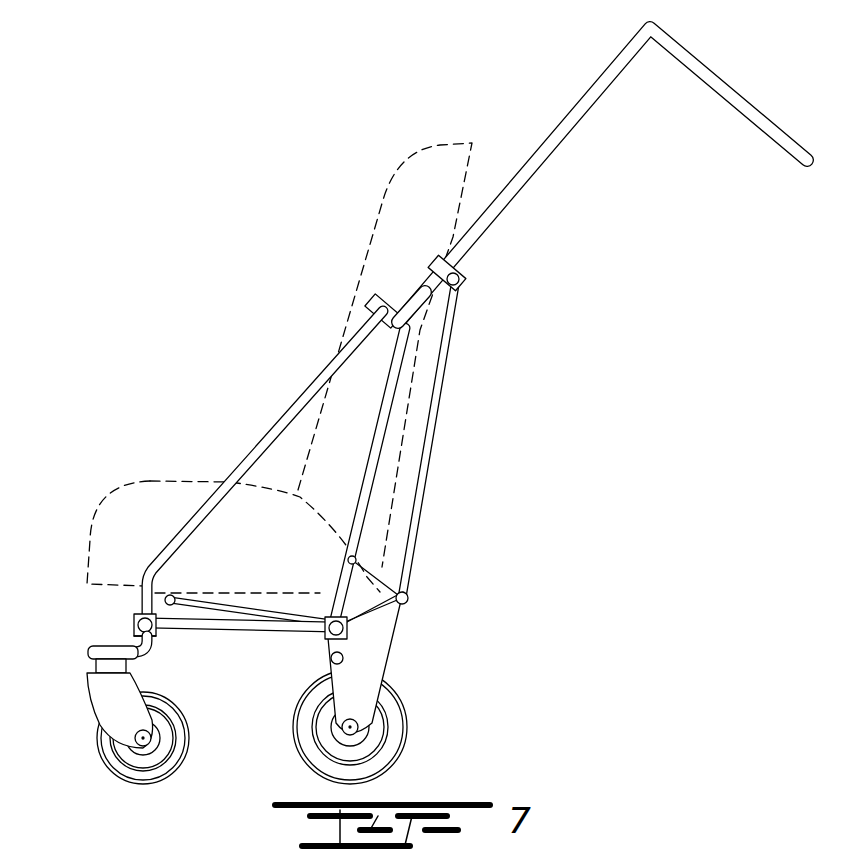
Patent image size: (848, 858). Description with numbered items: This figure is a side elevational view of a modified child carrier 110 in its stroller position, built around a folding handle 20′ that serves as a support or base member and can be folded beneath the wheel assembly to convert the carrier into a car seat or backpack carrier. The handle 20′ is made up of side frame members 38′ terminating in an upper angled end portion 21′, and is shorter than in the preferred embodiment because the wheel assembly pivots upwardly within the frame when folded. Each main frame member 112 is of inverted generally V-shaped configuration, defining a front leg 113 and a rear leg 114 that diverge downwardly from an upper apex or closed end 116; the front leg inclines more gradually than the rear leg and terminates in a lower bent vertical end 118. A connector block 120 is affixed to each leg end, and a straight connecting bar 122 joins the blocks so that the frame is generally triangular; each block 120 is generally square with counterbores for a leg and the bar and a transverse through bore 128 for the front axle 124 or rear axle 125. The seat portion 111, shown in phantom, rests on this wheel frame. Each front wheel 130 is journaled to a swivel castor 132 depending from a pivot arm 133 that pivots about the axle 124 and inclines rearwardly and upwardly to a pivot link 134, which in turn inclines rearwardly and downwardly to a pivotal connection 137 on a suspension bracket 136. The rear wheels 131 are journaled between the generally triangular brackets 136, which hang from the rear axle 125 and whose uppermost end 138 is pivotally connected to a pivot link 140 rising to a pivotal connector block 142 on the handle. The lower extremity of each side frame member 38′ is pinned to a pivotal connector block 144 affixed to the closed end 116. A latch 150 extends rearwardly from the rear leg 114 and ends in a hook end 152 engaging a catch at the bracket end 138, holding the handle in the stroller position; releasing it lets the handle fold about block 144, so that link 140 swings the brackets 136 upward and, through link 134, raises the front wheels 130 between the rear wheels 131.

The folding handle 20′ is at (545, 160).
The upper angled end portion 21′ is at (745, 97).
The side frame member 38′ is at (596, 100).
The carrier 110 is at (332, 363).
The seat portion 111 is at (150, 481).
The main frame member 112 is at (401, 369).
The front leg 113 is at (294, 404).
The rear leg 114 is at (396, 401).
The upper apex or closed end 116 is at (416, 316).
The lower bent vertical end 118 is at (142, 592).
The connector block 120 is at (348, 627).
The straight connecting bar 122 is at (240, 633).
The front axle 124 is at (133, 625).
The rear axle 125 is at (344, 657).
The transverse through bore 128 is at (320, 593).
The front wheel 130 is at (190, 750).
The rear wheel 131 is at (409, 722).
The swivel mount or castor 132 is at (90, 688).
The pivot arm 133 is at (140, 652).
The pivot link 134 is at (176, 594).
The suspension bracket 136 is at (384, 668).
The pivotal connection 137 is at (330, 662).
The uppermost end 138 is at (372, 607).
The pivot link 140 is at (434, 437).
The pivotal connector block 142 is at (462, 280).
The pivotal connector block 144 is at (372, 302).
The latch 150 is at (358, 562).
The hook end 152 is at (409, 603).